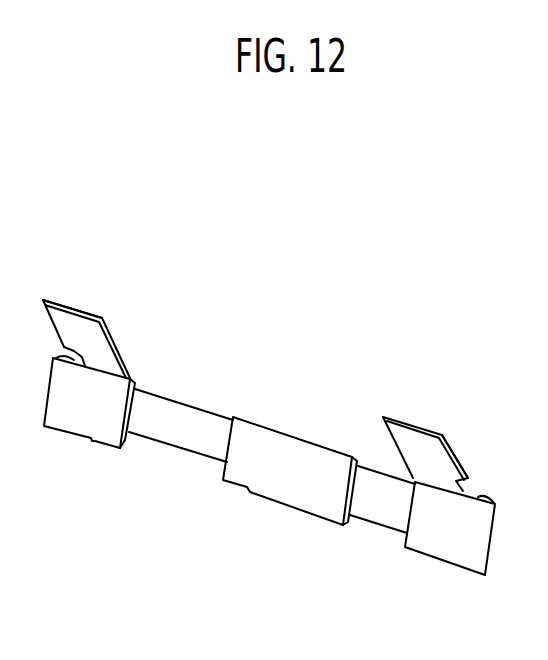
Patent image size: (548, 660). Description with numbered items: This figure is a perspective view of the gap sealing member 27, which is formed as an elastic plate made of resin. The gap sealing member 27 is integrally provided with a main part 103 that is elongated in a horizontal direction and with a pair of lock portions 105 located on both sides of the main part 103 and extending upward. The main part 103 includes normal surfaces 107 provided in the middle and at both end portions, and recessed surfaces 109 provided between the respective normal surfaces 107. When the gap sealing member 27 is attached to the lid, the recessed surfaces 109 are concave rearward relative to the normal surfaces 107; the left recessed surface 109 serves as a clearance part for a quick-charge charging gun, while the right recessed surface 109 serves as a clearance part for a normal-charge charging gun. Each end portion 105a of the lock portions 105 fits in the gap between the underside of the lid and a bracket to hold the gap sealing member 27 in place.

The gap sealing member 27 is at (262, 426).
The main part 103 is at (302, 468).
The lock portion 105 is at (88, 330).
The end portion 105a is at (54, 308).
The normal surface 107 is at (72, 420).
The recessed surface 109 is at (180, 438).